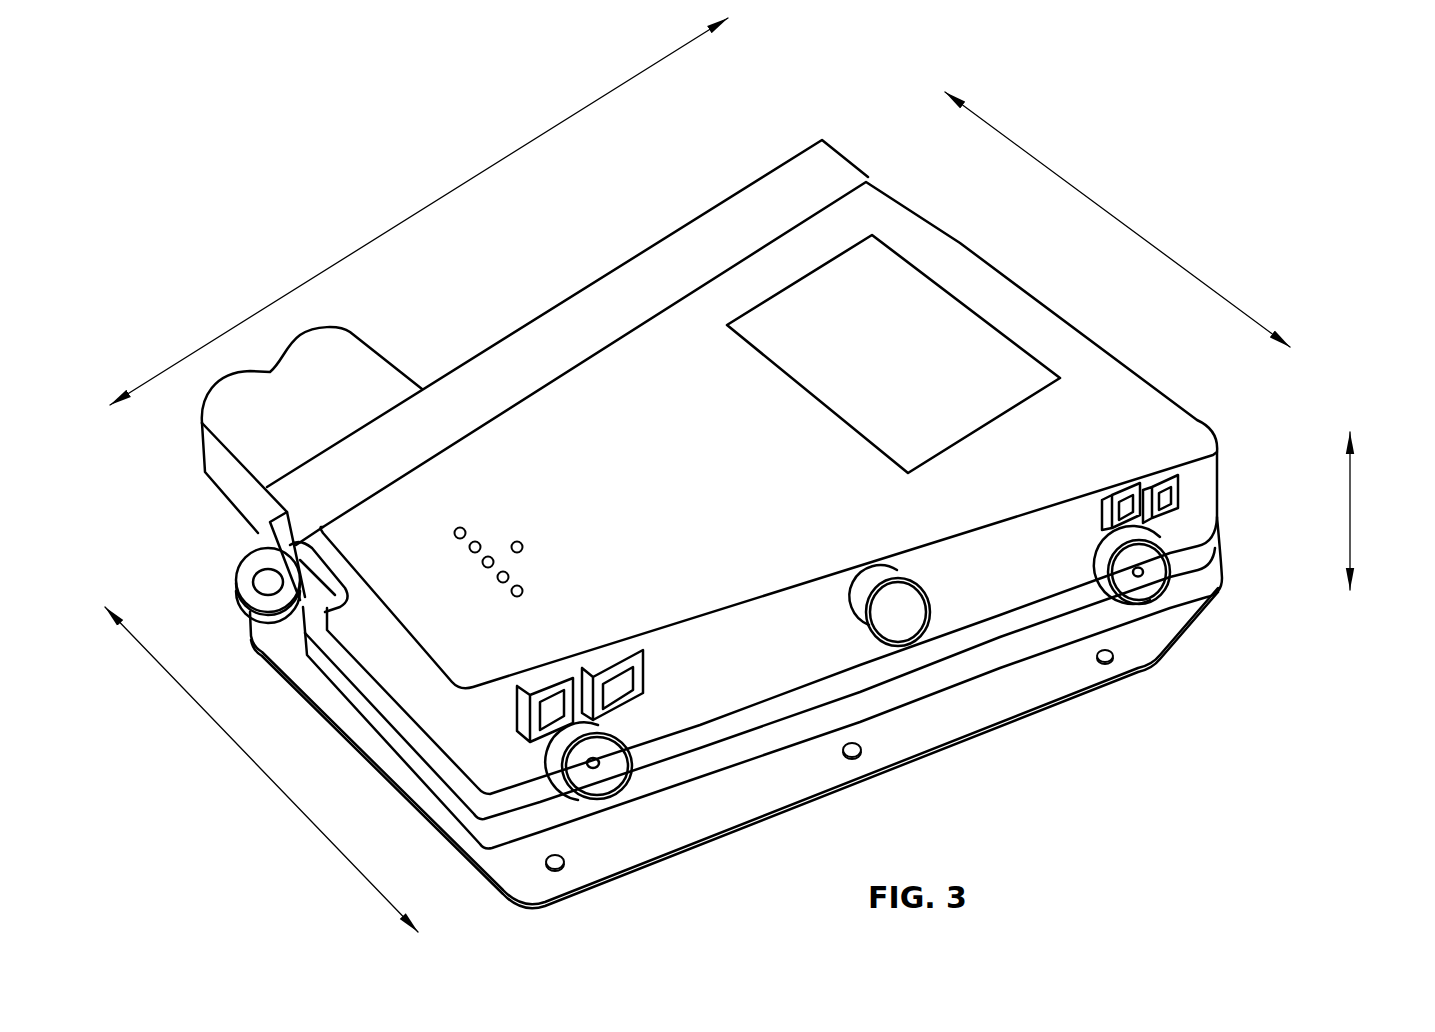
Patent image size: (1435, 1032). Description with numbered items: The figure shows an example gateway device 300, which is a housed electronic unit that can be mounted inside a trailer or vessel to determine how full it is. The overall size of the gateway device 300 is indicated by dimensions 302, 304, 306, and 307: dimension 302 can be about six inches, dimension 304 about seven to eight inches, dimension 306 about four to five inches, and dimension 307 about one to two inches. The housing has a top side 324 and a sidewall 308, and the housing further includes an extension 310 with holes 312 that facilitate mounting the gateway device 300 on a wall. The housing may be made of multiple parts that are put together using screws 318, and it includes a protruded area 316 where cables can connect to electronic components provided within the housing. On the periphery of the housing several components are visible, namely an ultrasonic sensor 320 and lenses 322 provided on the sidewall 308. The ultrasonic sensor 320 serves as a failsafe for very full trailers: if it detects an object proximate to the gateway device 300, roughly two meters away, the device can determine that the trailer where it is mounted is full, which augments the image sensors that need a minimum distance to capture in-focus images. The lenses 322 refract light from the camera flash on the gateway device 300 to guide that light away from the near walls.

The gateway device 300 is at (276, 152).
The dimension 302 is at (1086, 196).
The dimension 304 is at (553, 124).
The dimension 306 is at (261, 769).
The dimension 307 is at (1354, 458).
The sidewall 308 is at (1186, 536).
The extension 310 is at (1045, 690).
The holes 312 is at (1108, 664).
The protruded area 316 is at (356, 362).
The screws 318 is at (601, 772).
The ultrasonic sensor 320 is at (917, 636).
The lenses 322 is at (1180, 491).
The top side 324 is at (850, 203).